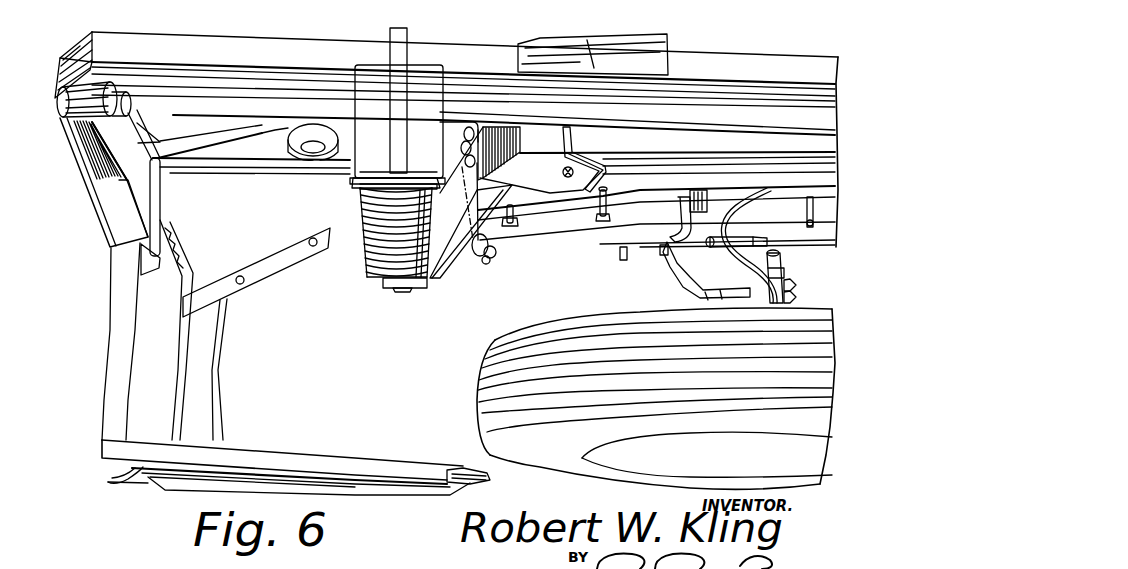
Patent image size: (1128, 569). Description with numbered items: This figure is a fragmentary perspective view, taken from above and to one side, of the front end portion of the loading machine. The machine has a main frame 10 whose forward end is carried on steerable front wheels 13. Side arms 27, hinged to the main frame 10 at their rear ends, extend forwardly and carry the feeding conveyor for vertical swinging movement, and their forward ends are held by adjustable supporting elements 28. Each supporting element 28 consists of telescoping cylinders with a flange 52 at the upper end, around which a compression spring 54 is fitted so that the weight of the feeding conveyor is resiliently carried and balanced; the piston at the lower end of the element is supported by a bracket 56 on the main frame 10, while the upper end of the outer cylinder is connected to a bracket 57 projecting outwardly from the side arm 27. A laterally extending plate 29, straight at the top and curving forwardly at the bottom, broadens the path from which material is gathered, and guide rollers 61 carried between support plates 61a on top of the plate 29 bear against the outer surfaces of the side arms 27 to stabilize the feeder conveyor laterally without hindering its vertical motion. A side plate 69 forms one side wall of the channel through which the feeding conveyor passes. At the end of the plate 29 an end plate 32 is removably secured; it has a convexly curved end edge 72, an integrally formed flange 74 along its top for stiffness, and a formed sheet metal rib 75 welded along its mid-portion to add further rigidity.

The main frame 10 is at (443, 53).
The steerable wheels 13 is at (482, 378).
The side arms 27 is at (307, 50).
The adjustable supporting elements 28 is at (382, 266).
The plate 29 is at (133, 373).
The end plates 32 is at (305, 455).
The flange 52 is at (363, 196).
The compression spring 54 is at (380, 266).
The bracket 56 is at (448, 258).
The bracket 57 is at (352, 164).
The guide rollers 61 is at (110, 86).
The support plates 61a is at (103, 190).
The side plate 69 is at (244, 243).
The convexly curved end edge 72 is at (488, 482).
The flange 74 is at (393, 471).
The rib 75 is at (178, 486).